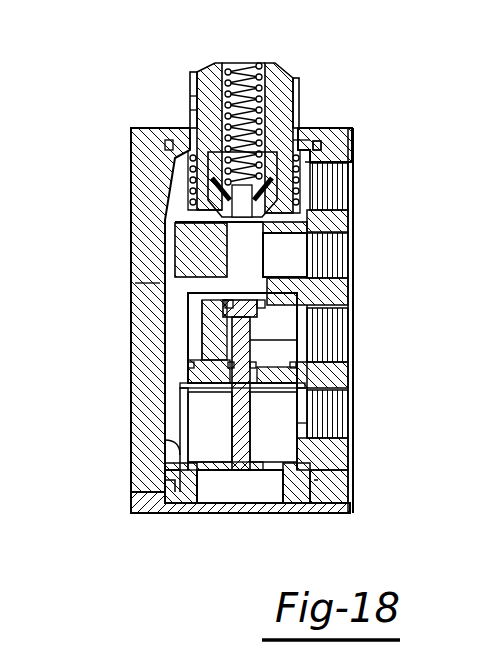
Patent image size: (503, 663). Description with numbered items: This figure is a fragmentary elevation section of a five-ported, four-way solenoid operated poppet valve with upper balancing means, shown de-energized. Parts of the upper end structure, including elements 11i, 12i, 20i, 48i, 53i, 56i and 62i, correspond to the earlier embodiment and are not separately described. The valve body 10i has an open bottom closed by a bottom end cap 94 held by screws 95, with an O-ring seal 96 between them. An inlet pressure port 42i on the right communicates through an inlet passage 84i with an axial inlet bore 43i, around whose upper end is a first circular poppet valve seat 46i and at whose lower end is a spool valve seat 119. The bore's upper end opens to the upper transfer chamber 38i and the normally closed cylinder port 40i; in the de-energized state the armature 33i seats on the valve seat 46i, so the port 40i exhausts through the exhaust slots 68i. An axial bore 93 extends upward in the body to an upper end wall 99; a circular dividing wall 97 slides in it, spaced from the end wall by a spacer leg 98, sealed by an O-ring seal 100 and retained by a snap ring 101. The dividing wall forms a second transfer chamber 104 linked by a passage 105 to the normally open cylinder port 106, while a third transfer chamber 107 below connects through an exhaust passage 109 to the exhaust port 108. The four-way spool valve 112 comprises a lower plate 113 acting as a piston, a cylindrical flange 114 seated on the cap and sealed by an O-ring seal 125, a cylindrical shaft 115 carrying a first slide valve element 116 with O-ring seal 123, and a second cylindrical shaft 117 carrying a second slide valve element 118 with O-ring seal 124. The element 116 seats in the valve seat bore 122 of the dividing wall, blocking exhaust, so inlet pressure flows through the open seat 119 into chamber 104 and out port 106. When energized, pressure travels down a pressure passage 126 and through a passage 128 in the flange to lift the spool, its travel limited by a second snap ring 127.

The valve body 10i is at (128, 208).
The cap member 11i is at (190, 96).
The cap sleeve 12i is at (190, 110).
The housing body 20i is at (352, 160).
The armature 33i is at (320, 141).
The upper transfer chamber 38i is at (352, 198).
The normally closed cylinder port 40i is at (350, 178).
The inlet pressure port 42i is at (300, 278).
The inlet bore 43i is at (188, 262).
The first circular poppet valve seat 46i is at (258, 218).
The spring retainer 48i is at (300, 143).
The spring cap 53i is at (263, 66).
The main spring 56i is at (240, 72).
The auxiliary spring 62i is at (140, 192).
The exhaust slots 68i is at (193, 72).
The inlet passage 84i is at (325, 248).
The axial bore 93 is at (195, 395).
The bottom end cap 94 is at (290, 492).
The screws 95 is at (345, 500).
The O-ring seal 96 is at (160, 498).
The circular dividing wall 97 is at (200, 348).
The spacer leg 98 is at (190, 312).
The upper end wall 99 is at (195, 296).
The O-ring seal 100 is at (195, 373).
The snap ring 101 is at (215, 410).
The second transfer chamber 104 is at (290, 298).
The passage 105 is at (270, 355).
The normally open cylinder port 106 is at (290, 312).
The third transfer chamber 107 is at (300, 455).
The exhaust port 108 is at (300, 390).
The exhaust passage 109 is at (310, 398).
The four-way spool valve 112 is at (212, 485).
The lower end transverse circular plate 113 is at (253, 492).
The cylindrical flange 114 is at (312, 492).
The cylindrical shaft 115 is at (175, 470).
The first slide valve element 116 is at (265, 340).
The second cylindrical shaft 117 is at (298, 313).
The second slide valve element 118 is at (222, 320).
The spool valve seat 119 is at (148, 283).
The valve seat bore 122 is at (305, 423).
The O-ring seal 123 is at (196, 458).
The O-ring seal 124 is at (241, 250).
The O-ring seal 125 is at (170, 505).
The pressure passage 126 is at (170, 448).
The second snap ring 127 is at (345, 462).
The passage 128 is at (188, 492).